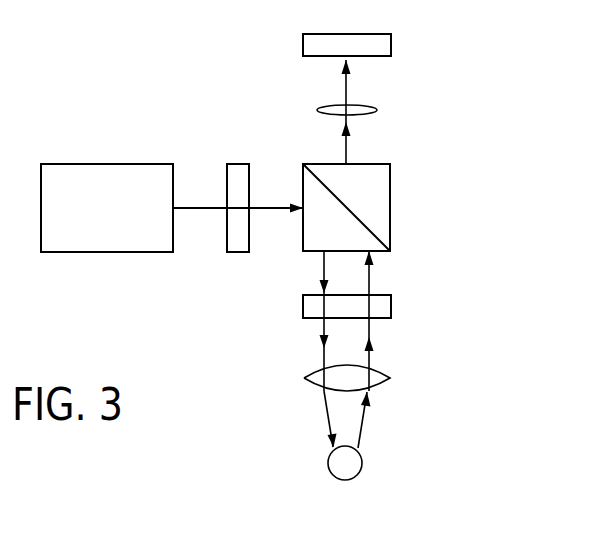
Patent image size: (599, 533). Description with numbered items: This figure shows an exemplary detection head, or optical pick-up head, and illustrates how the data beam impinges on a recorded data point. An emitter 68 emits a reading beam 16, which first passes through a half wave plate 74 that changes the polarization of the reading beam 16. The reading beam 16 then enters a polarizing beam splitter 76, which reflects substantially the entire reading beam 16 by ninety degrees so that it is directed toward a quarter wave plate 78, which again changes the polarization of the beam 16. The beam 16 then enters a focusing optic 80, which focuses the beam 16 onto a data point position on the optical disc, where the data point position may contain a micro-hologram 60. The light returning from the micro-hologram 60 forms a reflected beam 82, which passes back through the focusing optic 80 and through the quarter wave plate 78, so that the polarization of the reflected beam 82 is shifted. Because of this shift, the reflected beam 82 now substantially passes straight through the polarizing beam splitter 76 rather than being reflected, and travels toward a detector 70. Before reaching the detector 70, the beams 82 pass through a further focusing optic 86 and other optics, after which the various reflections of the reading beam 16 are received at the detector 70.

The emitter 68 is at (106, 164).
The reading beam 16 is at (206, 210).
The half wave plate 74 is at (237, 164).
The polarizing beam splitter 76 is at (391, 208).
The reflected beam 82 is at (346, 85).
The focusing optic 86 is at (371, 107).
The detector 70 is at (391, 44).
The quarter wave plate 78 is at (392, 301).
The focusing optic 80 is at (381, 384).
The micro-hologram 60 is at (361, 466).